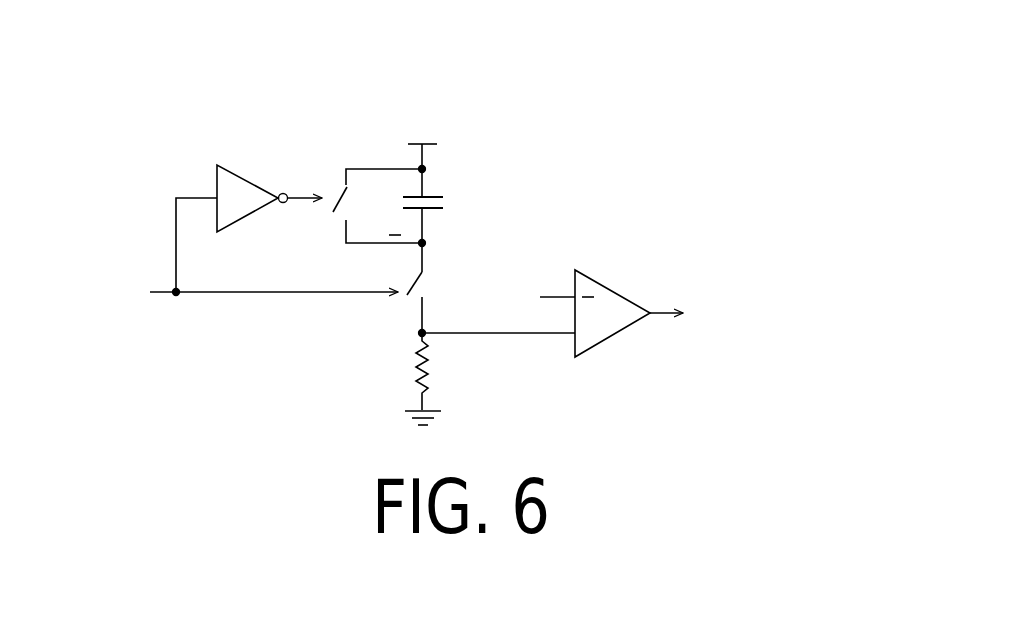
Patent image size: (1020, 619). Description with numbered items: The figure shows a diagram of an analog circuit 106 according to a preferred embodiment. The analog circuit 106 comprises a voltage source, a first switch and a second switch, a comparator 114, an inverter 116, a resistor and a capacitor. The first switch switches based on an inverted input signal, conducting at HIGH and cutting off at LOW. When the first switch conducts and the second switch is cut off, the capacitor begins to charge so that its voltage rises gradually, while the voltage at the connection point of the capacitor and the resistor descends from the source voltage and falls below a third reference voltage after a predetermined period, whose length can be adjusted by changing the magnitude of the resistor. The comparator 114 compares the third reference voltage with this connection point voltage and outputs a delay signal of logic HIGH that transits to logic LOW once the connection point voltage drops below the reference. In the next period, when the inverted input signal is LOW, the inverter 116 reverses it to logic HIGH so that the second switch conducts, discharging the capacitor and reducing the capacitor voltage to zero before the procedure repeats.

The analog circuit 106 is at (747, 67).
The comparator 114 is at (593, 278).
The inverter 116 is at (245, 178).